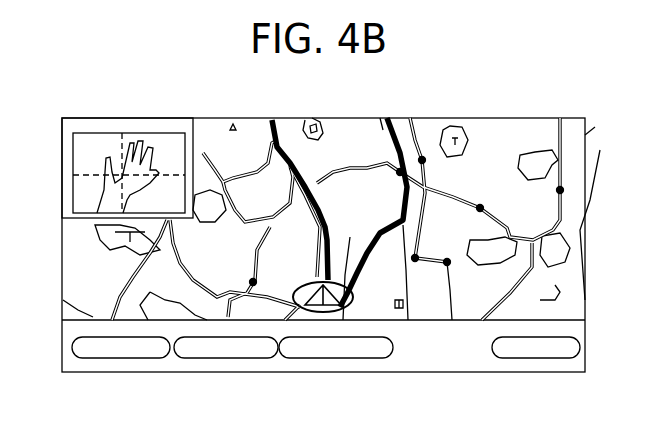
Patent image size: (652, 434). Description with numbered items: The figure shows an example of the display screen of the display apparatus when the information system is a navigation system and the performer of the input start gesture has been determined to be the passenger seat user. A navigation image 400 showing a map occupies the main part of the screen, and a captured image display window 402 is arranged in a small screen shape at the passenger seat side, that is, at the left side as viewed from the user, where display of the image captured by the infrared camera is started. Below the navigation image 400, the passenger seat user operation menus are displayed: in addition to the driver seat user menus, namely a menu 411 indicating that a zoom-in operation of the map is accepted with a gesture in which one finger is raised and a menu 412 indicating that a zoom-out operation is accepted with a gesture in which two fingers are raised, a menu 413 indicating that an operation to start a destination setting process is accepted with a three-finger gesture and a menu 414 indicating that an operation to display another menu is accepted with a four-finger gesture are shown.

The navigation image 400 is at (570, 167).
The captured image display window 402 is at (165, 142).
The menu indicating zoom-in operation 411 is at (145, 358).
The menu indicating zoom-out operation 412 is at (233, 358).
The menu indicating destination setting operation 413 is at (342, 358).
The menu indicating another-menu display operation 414 is at (535, 358).